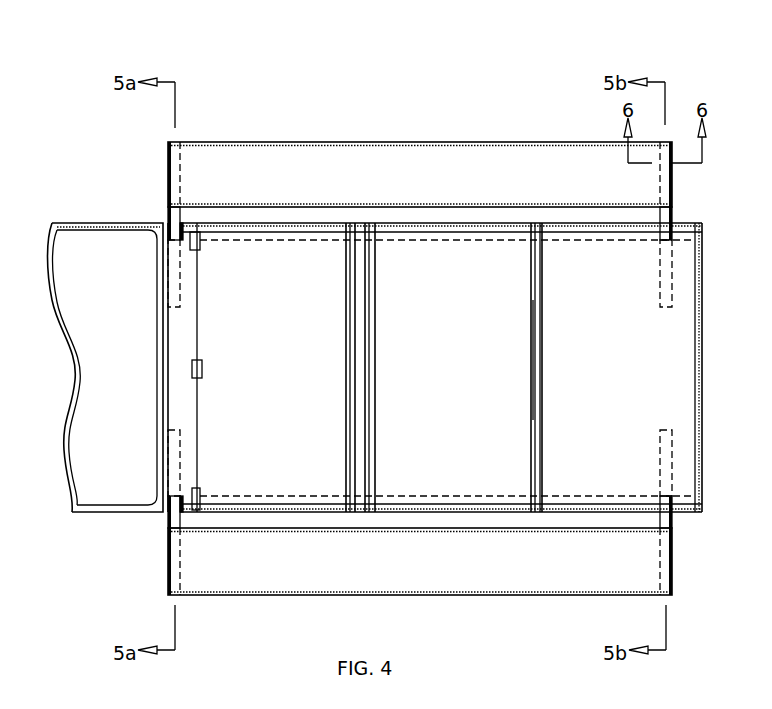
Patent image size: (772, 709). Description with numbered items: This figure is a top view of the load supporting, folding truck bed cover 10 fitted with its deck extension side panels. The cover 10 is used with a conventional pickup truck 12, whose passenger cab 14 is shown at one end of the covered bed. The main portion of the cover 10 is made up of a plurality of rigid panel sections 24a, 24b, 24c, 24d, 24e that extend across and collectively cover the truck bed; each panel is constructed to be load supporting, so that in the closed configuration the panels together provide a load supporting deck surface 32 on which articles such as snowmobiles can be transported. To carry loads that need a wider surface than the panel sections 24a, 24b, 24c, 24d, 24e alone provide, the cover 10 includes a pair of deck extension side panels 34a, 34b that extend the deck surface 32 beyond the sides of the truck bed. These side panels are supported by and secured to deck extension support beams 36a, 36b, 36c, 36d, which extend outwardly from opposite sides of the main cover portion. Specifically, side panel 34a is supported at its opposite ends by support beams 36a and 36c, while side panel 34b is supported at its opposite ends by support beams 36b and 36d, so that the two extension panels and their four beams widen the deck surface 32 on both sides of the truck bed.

The truck bed cover 10 is at (518, 72).
The pickup truck 12 is at (97, 222).
The passenger cab 14 is at (107, 490).
The panel section 24a is at (175, 318).
The panel section 24b is at (330, 368).
The panel section 24c is at (362, 318).
The panel section 24d is at (517, 345).
The panel section 24e is at (555, 412).
The load supporting deck surface 32 is at (262, 468).
The deck extension side panel 34a is at (422, 142).
The deck extension side panel 34b is at (503, 597).
The deck extension support beam 36a is at (172, 220).
The deck extension support beam 36b is at (172, 515).
The deck extension support beam 36c is at (670, 215).
The deck extension support beam 36d is at (672, 520).